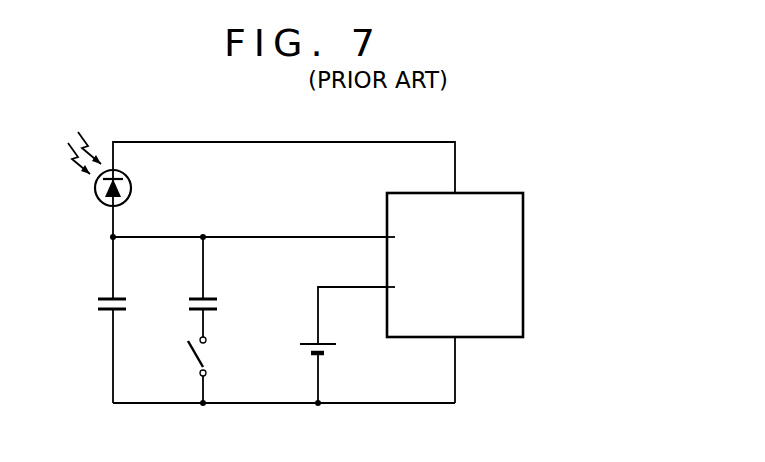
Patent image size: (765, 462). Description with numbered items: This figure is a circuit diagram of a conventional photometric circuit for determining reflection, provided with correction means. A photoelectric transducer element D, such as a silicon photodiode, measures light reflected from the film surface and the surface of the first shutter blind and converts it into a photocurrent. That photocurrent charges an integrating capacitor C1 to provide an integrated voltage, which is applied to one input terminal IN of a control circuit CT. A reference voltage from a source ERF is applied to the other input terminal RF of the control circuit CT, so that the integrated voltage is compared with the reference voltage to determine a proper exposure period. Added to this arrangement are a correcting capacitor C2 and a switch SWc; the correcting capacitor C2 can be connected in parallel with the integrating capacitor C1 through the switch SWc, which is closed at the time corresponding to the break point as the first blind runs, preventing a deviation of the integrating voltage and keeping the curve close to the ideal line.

The photoelectric transducer element D is at (125, 182).
The integrating capacitor C1 is at (127, 303).
The correcting capacitor C2 is at (219, 303).
The switch SWc is at (205, 360).
The reference voltage source ERF is at (330, 348).
The control circuit CT is at (476, 265).
The input terminal IN is at (400, 241).
The input terminal RF is at (401, 288).